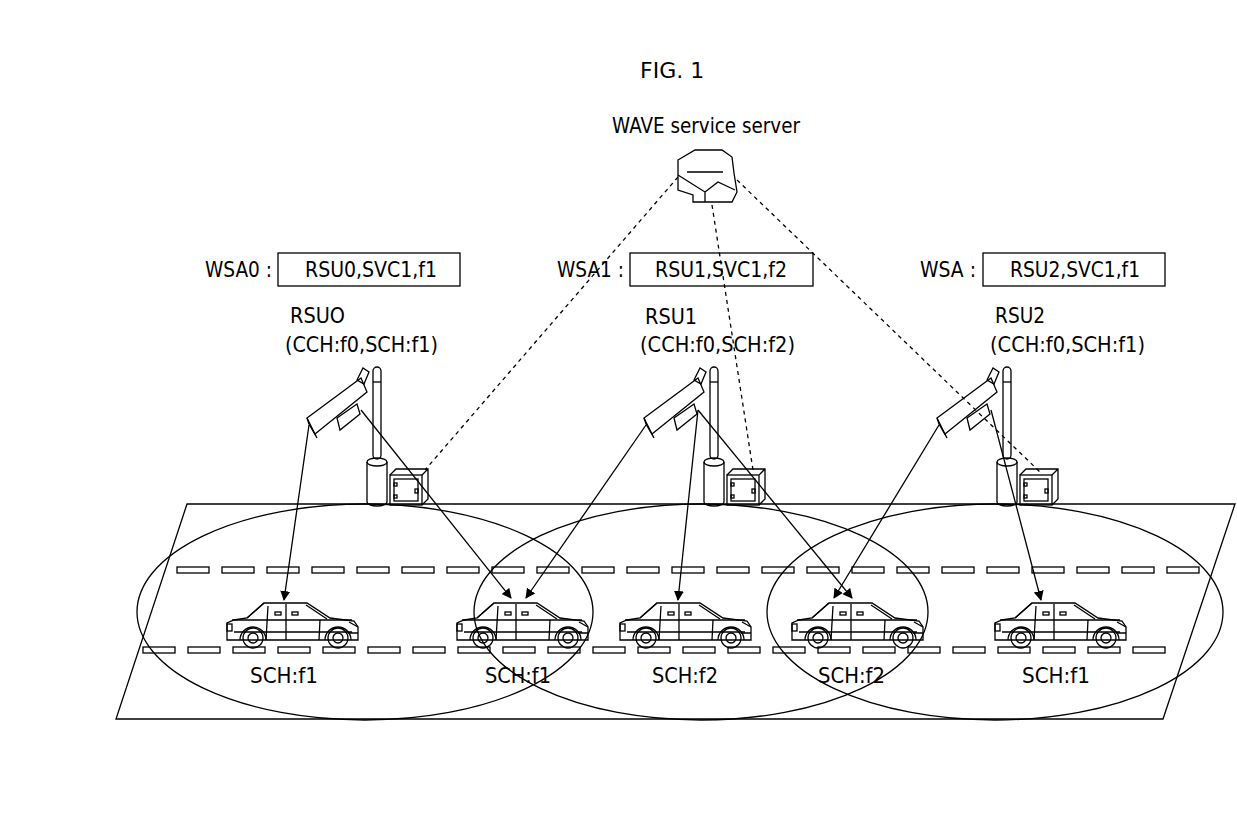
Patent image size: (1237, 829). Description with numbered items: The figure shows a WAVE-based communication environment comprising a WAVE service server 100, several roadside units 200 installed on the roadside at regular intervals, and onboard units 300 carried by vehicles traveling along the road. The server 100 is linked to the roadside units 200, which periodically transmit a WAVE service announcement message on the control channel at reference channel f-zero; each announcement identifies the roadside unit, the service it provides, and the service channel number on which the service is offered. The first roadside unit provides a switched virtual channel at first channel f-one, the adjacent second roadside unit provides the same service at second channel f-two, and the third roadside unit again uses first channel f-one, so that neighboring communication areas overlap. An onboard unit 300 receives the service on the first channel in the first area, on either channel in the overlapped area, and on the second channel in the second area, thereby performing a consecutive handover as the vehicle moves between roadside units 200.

The WAVE service server 100 is at (735, 162).
The roadside unit 200 is at (1012, 396).
The onboard unit 300 is at (1118, 630).